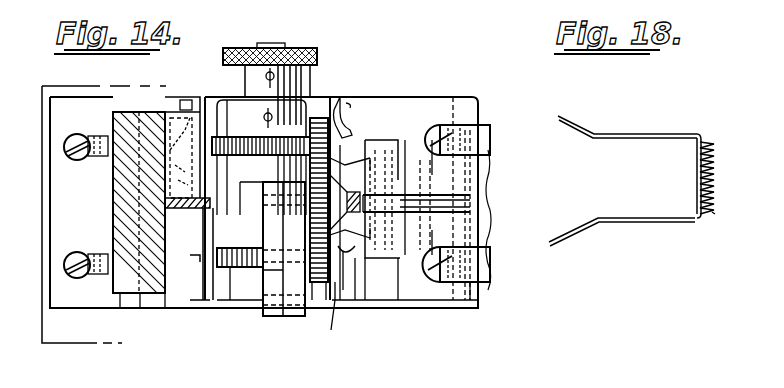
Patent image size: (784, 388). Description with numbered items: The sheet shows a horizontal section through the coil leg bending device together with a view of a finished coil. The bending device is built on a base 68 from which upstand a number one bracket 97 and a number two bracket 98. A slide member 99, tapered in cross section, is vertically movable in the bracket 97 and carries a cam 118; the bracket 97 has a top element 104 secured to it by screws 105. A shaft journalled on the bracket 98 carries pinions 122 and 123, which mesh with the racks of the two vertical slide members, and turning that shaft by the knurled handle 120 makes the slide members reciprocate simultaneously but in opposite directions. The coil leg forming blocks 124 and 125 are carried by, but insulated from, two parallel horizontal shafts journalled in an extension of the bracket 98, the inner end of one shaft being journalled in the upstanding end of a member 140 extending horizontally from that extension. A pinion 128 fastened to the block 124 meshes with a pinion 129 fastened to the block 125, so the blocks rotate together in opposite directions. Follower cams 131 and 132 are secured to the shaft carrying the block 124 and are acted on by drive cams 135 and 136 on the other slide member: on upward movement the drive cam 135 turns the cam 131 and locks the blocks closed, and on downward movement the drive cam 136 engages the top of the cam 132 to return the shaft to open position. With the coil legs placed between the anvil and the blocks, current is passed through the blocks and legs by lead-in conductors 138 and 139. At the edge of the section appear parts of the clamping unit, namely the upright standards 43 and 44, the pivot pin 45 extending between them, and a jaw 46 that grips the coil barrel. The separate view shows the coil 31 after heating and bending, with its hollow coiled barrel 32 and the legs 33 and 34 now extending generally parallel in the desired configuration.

In FIG. 14, the base 68 is at (64, 343).
In FIG. 14, the bracket 97 is at (82, 306).
In FIG. 14, the bracket 98 is at (446, 104).
In FIG. 14, the slide member 99 is at (172, 106).
In FIG. 14, the top element 104 is at (120, 183).
In FIG. 14, the screws 105 is at (100, 134).
In FIG. 14, the cam 118 is at (165, 203).
In FIG. 14, the knurled handle 120 is at (296, 47).
In FIG. 14, the pinion 122 is at (214, 106).
In FIG. 14, the pinion 123 is at (208, 300).
In FIG. 14, the coil leg forming block 124 is at (388, 300).
In FIG. 14, the coil leg forming block 125 is at (372, 140).
In FIG. 14, the pinion 128 is at (320, 302).
In FIG. 14, the pinion 129 is at (326, 100).
In FIG. 14, the follower cam 131 is at (292, 212).
In FIG. 14, the follower cam 132 is at (258, 212).
In FIG. 14, the drive cam 135 is at (292, 320).
In FIG. 14, the drive cam 136 is at (268, 316).
In FIG. 14, the lead-in conductor 138 is at (344, 312).
In FIG. 14, the lead-in conductor 139 is at (338, 97).
In FIG. 14, the member 140 is at (261, 157).
In FIG. 14, the upright standard 44 is at (490, 133).
In FIG. 14, the upright standard 43 is at (490, 271).
In FIG. 14, the pivot pin 45 is at (478, 296).
In FIG. 14, the jaw 46 is at (432, 212).
In FIG. 18, the coil 31 is at (690, 181).
In FIG. 18, the hollow coiled barrel 32 is at (716, 206).
In FIG. 18, the leg 33 is at (616, 143).
In FIG. 18, the leg 34 is at (630, 226).